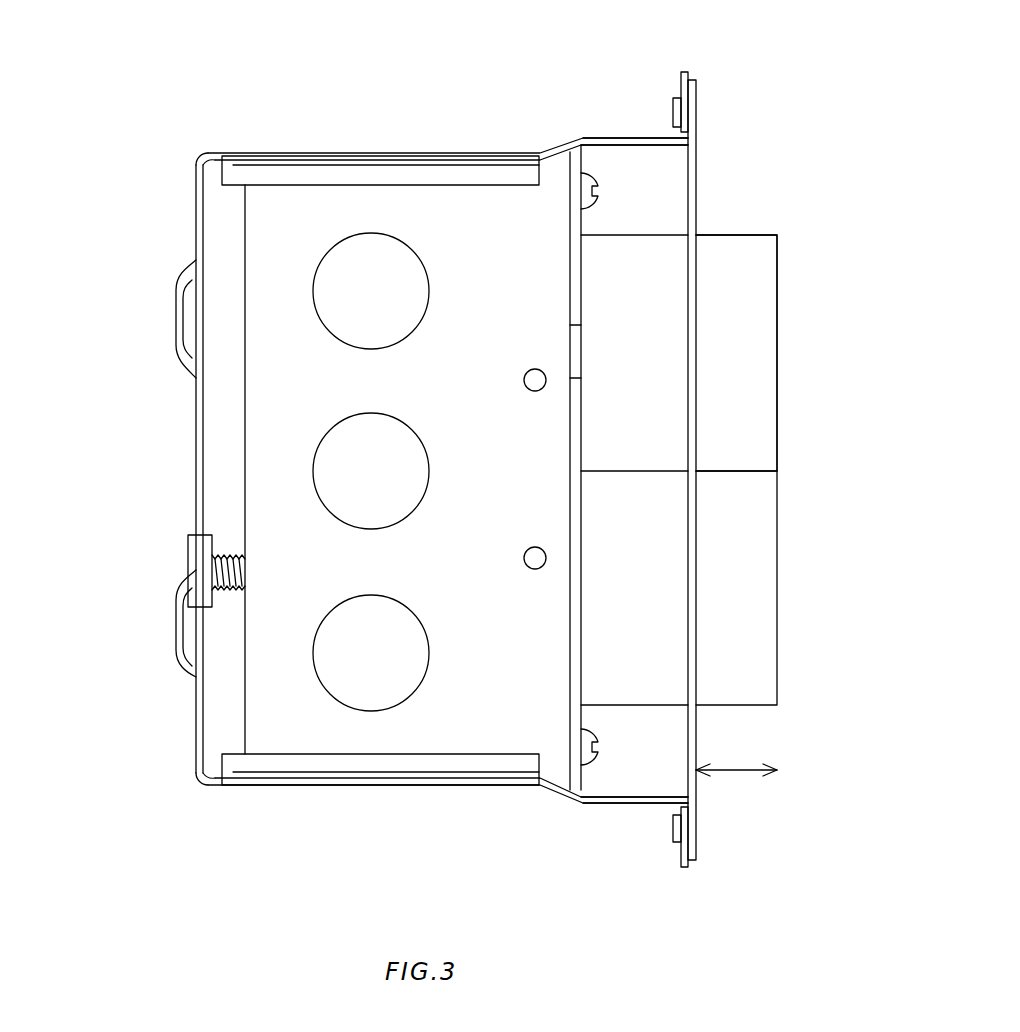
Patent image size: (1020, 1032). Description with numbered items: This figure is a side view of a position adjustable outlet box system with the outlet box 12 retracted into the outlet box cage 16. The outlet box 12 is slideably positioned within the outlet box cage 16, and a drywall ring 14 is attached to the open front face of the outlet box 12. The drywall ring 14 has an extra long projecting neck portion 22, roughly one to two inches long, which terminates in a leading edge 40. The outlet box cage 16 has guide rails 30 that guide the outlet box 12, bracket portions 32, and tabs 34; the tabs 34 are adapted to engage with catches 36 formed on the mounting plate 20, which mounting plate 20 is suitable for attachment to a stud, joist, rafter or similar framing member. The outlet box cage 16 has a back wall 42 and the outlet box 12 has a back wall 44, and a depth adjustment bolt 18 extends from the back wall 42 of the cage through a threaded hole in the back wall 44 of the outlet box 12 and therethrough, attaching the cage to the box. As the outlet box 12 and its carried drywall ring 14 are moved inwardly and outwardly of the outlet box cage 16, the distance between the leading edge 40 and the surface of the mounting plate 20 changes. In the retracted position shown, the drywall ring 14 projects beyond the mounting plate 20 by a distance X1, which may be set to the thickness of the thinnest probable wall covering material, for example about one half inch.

The outlet box 12 is at (547, 708).
The drywall ring 14 is at (581, 283).
The outlet box cage 16 is at (236, 799).
The adjustment bolt 18 is at (229, 556).
The mounting plate 20 is at (696, 167).
The projecting neck portion 22 is at (745, 577).
The guide rails 30 is at (344, 155).
The bracket portions 32 is at (612, 138).
The tabs 34 is at (681, 83).
The catches 36 is at (673, 107).
The leading edge 40 is at (778, 512).
The back wall 42 is at (195, 213).
The back wall 44 is at (240, 430).
The distance X1 is at (740, 778).